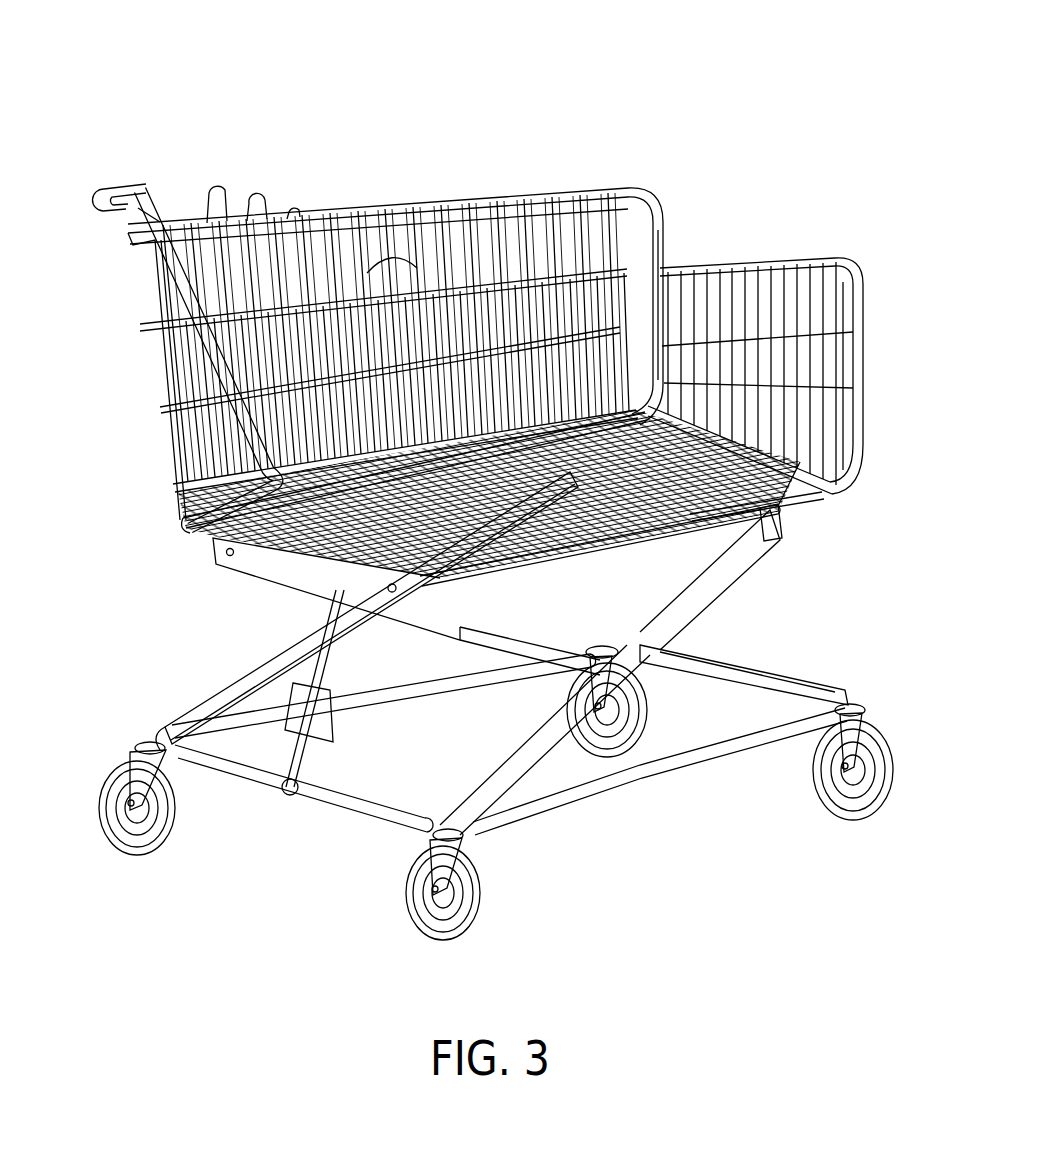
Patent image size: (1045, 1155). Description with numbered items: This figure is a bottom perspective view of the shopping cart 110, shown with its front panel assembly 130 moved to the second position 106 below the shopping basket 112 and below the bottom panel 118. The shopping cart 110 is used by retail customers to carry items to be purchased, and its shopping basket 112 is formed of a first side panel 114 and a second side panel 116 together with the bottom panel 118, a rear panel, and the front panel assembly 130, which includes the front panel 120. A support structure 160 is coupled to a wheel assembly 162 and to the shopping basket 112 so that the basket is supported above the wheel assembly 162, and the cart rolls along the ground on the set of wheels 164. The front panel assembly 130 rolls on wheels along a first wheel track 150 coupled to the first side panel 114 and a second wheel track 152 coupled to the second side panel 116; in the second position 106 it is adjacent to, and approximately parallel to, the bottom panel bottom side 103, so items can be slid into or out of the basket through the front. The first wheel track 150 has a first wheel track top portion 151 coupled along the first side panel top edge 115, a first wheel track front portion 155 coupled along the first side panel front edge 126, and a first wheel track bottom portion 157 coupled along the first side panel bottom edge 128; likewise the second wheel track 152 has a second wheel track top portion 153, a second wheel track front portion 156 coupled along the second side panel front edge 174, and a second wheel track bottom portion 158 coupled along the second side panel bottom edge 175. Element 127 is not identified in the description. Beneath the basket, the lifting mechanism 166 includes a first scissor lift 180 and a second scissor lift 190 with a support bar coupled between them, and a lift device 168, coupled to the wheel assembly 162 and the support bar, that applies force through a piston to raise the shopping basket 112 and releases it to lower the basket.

The bottom panel bottom side 103 is at (303, 545).
The second position 106 is at (180, 665).
The shopping cart 110 is at (537, 88).
The shopping basket 112 is at (122, 426).
The first side panel 114 is at (155, 490).
The first side panel top edge 115 is at (187, 223).
The second side panel 116 is at (692, 295).
The bottom panel 118 is at (767, 450).
The front panel 120 is at (802, 521).
The first side panel front edge 126 is at (757, 270).
The basket front wall 127 is at (142, 303).
The first side panel bottom edge 128 is at (183, 536).
The front panel assembly 130 is at (608, 569).
The first wheel track 150 is at (649, 219).
The first wheel track top portion 151 is at (386, 208).
The second wheel track 152 is at (833, 473).
The second wheel track top portion 153 is at (742, 285).
The first wheel track front portion 155 is at (667, 243).
The second wheel track front portion 156 is at (853, 337).
The first wheel track bottom portion 157 is at (540, 445).
The second wheel track bottom portion 158 is at (720, 515).
The support structure 160 is at (817, 621).
The wheel assembly 162 is at (390, 693).
The set of wheels 164 is at (727, 821).
The lifting mechanism 166 is at (780, 608).
The lift device 168 is at (327, 737).
The second side panel front edge 174 is at (833, 383).
The second side panel bottom edge 175 is at (836, 478).
The first scissor lift 180 is at (560, 620).
The second scissor lift 190 is at (783, 677).